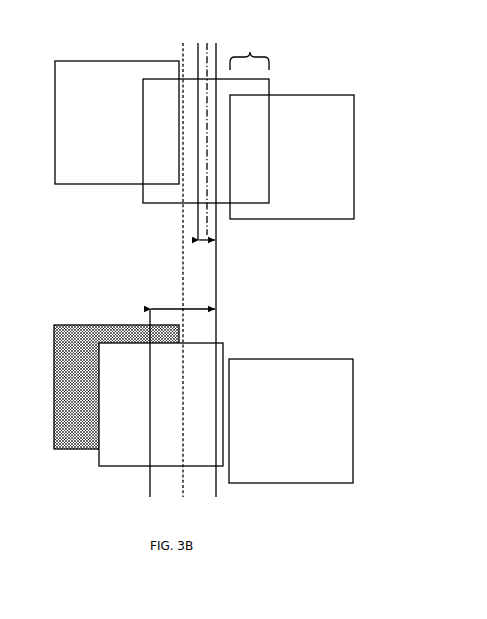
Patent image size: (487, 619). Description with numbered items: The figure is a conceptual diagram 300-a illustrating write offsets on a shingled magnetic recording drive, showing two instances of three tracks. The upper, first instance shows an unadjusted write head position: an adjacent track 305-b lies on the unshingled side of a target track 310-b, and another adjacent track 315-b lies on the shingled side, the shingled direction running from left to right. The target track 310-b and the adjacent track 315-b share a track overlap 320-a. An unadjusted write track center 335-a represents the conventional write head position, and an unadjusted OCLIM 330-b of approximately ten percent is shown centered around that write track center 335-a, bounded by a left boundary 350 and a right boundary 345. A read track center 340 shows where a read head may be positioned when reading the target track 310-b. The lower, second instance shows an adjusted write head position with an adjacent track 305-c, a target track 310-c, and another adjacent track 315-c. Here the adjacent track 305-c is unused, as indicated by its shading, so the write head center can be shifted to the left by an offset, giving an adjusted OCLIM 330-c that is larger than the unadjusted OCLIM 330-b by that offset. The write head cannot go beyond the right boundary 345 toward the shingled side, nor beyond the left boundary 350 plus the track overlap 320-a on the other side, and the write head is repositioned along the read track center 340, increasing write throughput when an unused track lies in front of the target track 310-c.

The conceptual diagram 300-a is at (434, 50).
The adjacent track 305-b is at (98, 61).
The target track 310-b is at (269, 79).
The adjacent track 315-b is at (342, 95).
The adjacent track 305-c is at (97, 325).
The target track 310-c is at (224, 350).
The adjacent track 315-c is at (342, 359).
The track overlap 320-a is at (249, 54).
The unadjusted OCLIM 330-b is at (216, 245).
The adjusted OCLIM 330-c is at (173, 307).
The unadjusted write track center 335-a is at (198, 45).
The read track center 340 is at (182, 223).
The right boundary 345 is at (217, 283).
The left boundary 350 is at (198, 165).